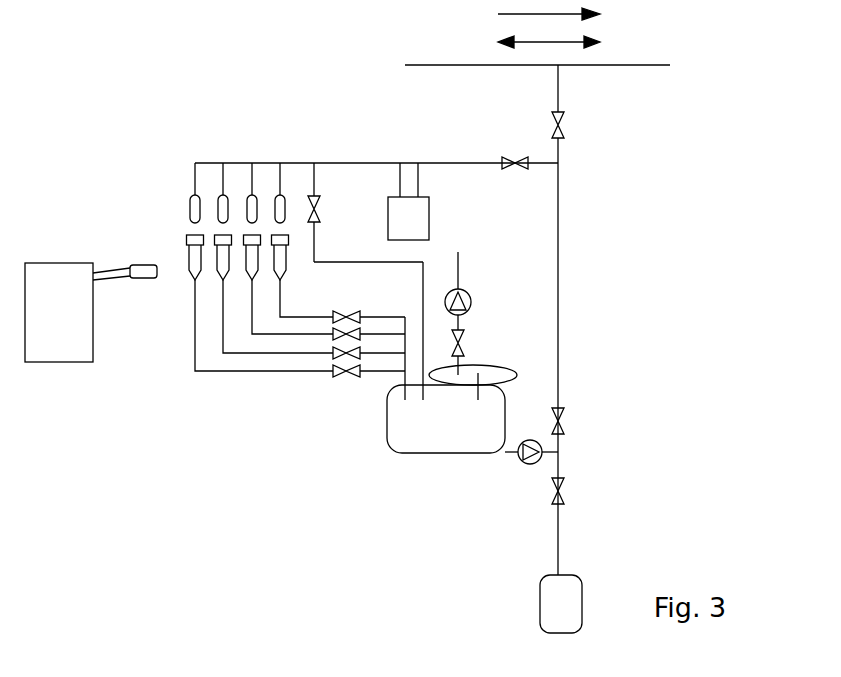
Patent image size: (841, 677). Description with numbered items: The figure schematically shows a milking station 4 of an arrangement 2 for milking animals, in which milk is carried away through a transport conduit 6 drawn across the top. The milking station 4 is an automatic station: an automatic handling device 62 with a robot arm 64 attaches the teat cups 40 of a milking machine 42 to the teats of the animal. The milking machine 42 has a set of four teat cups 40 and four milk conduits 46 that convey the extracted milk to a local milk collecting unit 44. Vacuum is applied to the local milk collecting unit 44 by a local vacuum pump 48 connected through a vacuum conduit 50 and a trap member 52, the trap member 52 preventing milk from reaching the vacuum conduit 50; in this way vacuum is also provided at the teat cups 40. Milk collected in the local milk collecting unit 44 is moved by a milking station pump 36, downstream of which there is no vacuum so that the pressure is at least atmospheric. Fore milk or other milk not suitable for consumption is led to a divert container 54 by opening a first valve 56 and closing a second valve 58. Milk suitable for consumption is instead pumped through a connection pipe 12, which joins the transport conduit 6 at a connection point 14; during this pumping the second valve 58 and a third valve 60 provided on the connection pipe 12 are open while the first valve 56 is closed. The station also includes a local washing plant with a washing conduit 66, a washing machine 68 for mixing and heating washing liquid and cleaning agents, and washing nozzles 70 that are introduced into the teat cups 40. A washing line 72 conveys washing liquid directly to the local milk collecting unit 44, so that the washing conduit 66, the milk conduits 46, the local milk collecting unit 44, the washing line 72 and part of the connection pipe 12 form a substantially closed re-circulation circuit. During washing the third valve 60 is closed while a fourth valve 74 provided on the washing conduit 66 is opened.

The arrangement for milking animals 2 is at (322, 43).
The milking station 4 is at (127, 126).
The transport conduit 6 is at (478, 63).
The connection pipe 12 is at (560, 100).
The connection point 14 is at (557, 68).
The milking station pump 36 is at (525, 463).
The teat cups 40 is at (278, 268).
The milking machine 42 is at (157, 492).
The local milk collecting unit 44 is at (435, 436).
The milk conduits 46 is at (315, 318).
The local vacuum pump 48 is at (468, 290).
The vacuum conduit 50 is at (463, 325).
The trap member 52 is at (492, 378).
The divert container 54 is at (548, 616).
The first valve 56 is at (565, 477).
The second valve 58 is at (562, 400).
The third valve 60 is at (561, 133).
The automatic handling device 62 is at (45, 313).
The robot arm 64 is at (145, 268).
The washing conduit 66 is at (350, 163).
The washing machine 68 is at (396, 230).
The washing nozzles 70 is at (194, 196).
The washing line 72 is at (390, 262).
The fourth valve 74 is at (528, 168).